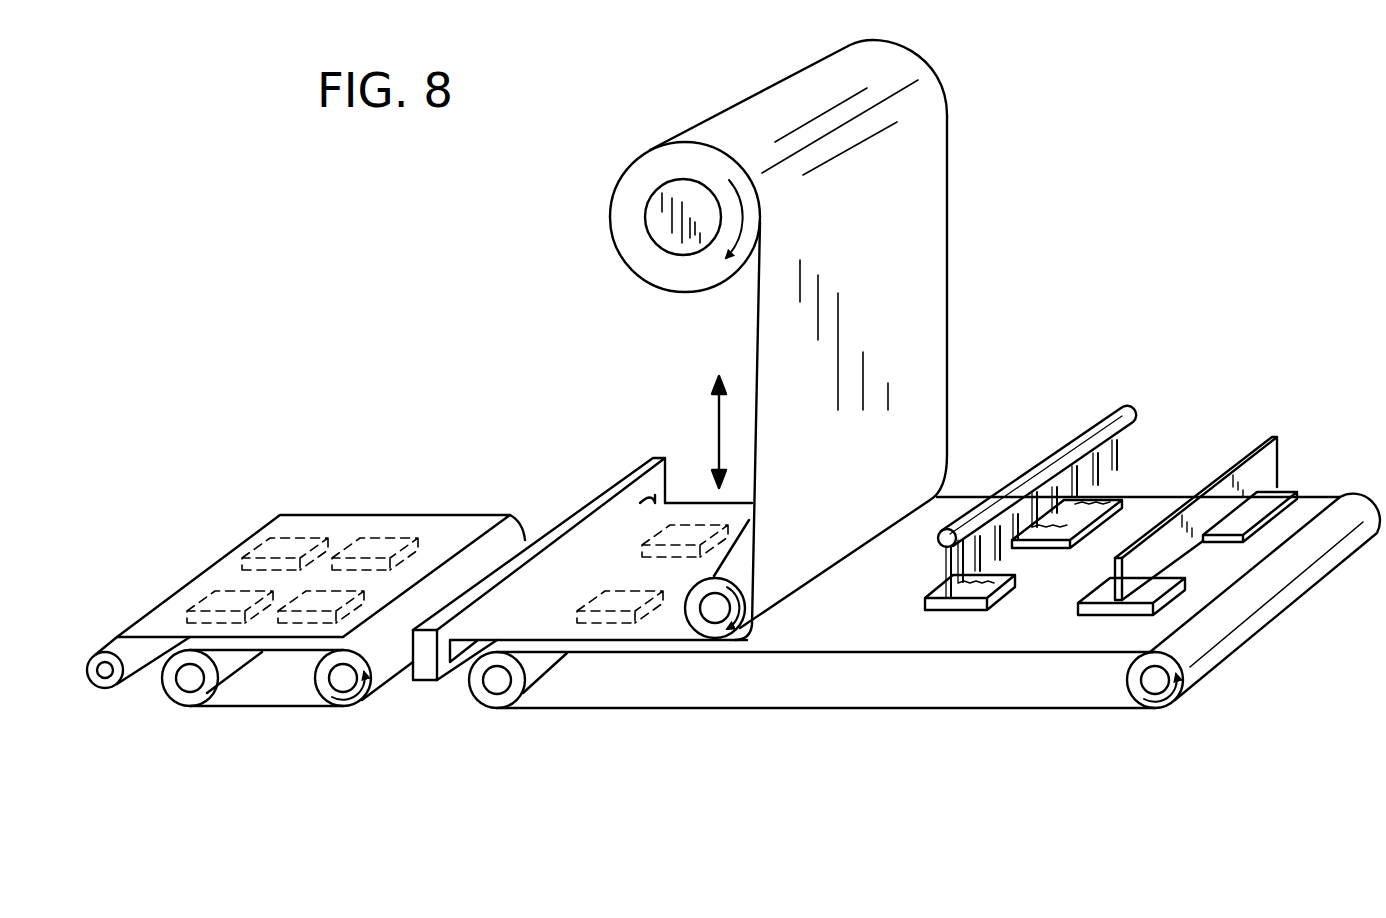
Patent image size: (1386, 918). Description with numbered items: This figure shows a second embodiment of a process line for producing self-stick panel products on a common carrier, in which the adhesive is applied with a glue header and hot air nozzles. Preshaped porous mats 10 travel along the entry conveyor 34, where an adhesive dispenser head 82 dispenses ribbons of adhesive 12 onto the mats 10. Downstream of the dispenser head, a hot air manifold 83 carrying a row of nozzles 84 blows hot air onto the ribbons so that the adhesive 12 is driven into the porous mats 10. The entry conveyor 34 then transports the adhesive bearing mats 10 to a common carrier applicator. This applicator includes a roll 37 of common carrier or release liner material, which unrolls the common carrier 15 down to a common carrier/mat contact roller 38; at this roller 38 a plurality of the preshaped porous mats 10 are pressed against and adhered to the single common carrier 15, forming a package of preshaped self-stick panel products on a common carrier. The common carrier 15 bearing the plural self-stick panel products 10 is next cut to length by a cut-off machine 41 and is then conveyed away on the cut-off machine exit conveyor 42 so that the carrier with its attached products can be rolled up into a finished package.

The preshaped porous mat 10 is at (1280, 488).
The ribbons of adhesive 12 is at (968, 592).
The common carrier 15 is at (930, 239).
The entry conveyor 34 is at (1050, 708).
The roll 37 is at (643, 243).
The common carrier/mat contact roller 38 is at (705, 628).
The cut-off machine 41 is at (425, 681).
The cut-off machine exit conveyor 42 is at (277, 708).
The adhesive dispenser head 82 is at (1270, 437).
The hot air manifold 83 is at (1127, 410).
The nozzles 84 is at (1125, 452).